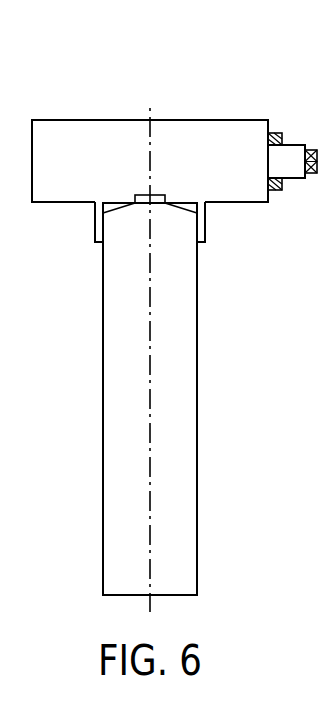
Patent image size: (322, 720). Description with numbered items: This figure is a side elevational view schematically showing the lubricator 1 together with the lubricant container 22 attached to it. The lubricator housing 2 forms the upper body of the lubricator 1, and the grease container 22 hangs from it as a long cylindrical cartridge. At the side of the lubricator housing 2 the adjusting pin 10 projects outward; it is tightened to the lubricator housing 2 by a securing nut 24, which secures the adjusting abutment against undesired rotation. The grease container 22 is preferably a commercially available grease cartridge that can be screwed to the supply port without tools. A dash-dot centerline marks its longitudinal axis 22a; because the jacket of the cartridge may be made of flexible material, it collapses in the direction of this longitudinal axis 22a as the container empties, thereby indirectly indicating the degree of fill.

The lubricator 1 is at (134, 106).
The lubricator housing 2 is at (62, 131).
The adjusting pin 10 is at (287, 153).
The lubricant container 22 is at (140, 231).
The longitudinal axis 22a is at (150, 495).
The securing nut 24 is at (276, 191).